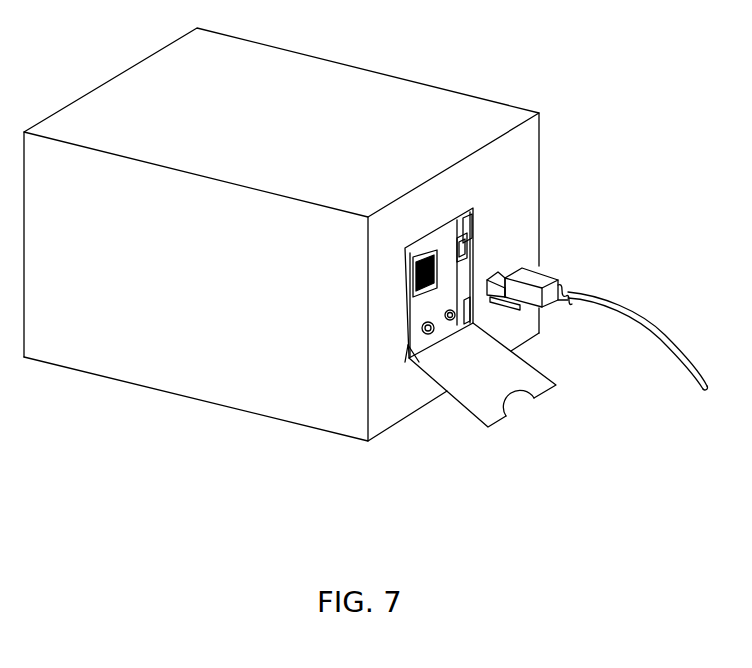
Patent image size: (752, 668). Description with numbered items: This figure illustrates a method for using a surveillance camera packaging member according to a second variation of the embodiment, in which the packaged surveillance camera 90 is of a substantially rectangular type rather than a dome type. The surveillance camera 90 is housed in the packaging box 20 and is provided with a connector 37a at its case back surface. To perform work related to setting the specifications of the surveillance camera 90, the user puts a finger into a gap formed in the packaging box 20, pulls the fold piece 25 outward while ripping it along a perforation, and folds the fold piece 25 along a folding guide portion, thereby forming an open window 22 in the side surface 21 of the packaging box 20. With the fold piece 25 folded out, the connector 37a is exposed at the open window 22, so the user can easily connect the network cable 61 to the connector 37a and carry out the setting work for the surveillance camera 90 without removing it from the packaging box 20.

The packaging box 20 is at (188, 403).
The side surface 21 is at (396, 402).
The open window 22 is at (427, 312).
The fold piece 25 is at (463, 410).
The connector 37a is at (408, 273).
The network cable 61 is at (629, 313).
The surveillance camera 90 is at (439, 240).